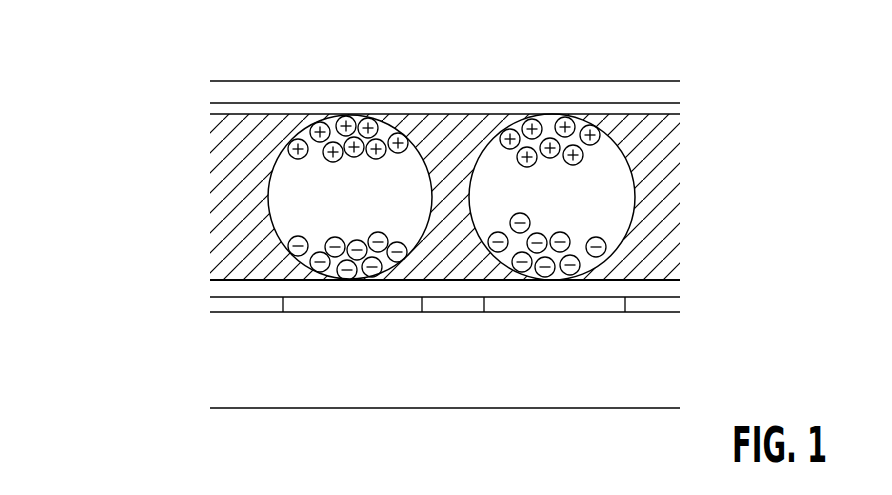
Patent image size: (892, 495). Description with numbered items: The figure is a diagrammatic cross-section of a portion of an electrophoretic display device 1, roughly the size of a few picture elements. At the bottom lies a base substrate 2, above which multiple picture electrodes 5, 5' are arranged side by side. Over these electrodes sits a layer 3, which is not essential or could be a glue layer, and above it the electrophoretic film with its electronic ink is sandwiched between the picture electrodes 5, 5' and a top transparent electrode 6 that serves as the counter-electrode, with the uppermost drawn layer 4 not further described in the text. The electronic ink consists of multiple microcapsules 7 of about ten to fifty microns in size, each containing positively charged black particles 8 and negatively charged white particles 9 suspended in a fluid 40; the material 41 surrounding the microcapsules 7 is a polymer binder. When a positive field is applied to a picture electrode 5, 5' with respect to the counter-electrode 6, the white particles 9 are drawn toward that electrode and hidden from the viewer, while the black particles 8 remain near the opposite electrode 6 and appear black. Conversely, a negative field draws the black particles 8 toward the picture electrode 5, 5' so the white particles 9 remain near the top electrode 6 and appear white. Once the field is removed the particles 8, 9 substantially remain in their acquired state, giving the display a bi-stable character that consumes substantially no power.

The electrophoretic display device 1 is at (167, 333).
The base substrate 2 is at (657, 362).
The layer 3 is at (663, 289).
The top substrate 4 is at (650, 108).
The picture electrode 5 is at (554, 338).
The picture electrode 5' is at (352, 338).
The top transparent electrode 6 is at (575, 92).
The microcapsule 7 is at (441, 197).
The positively charged black particles 8 is at (318, 125).
The negatively charged white particles 9 is at (288, 246).
The fluid 40 is at (363, 208).
The polymer binder 41 is at (576, 208).